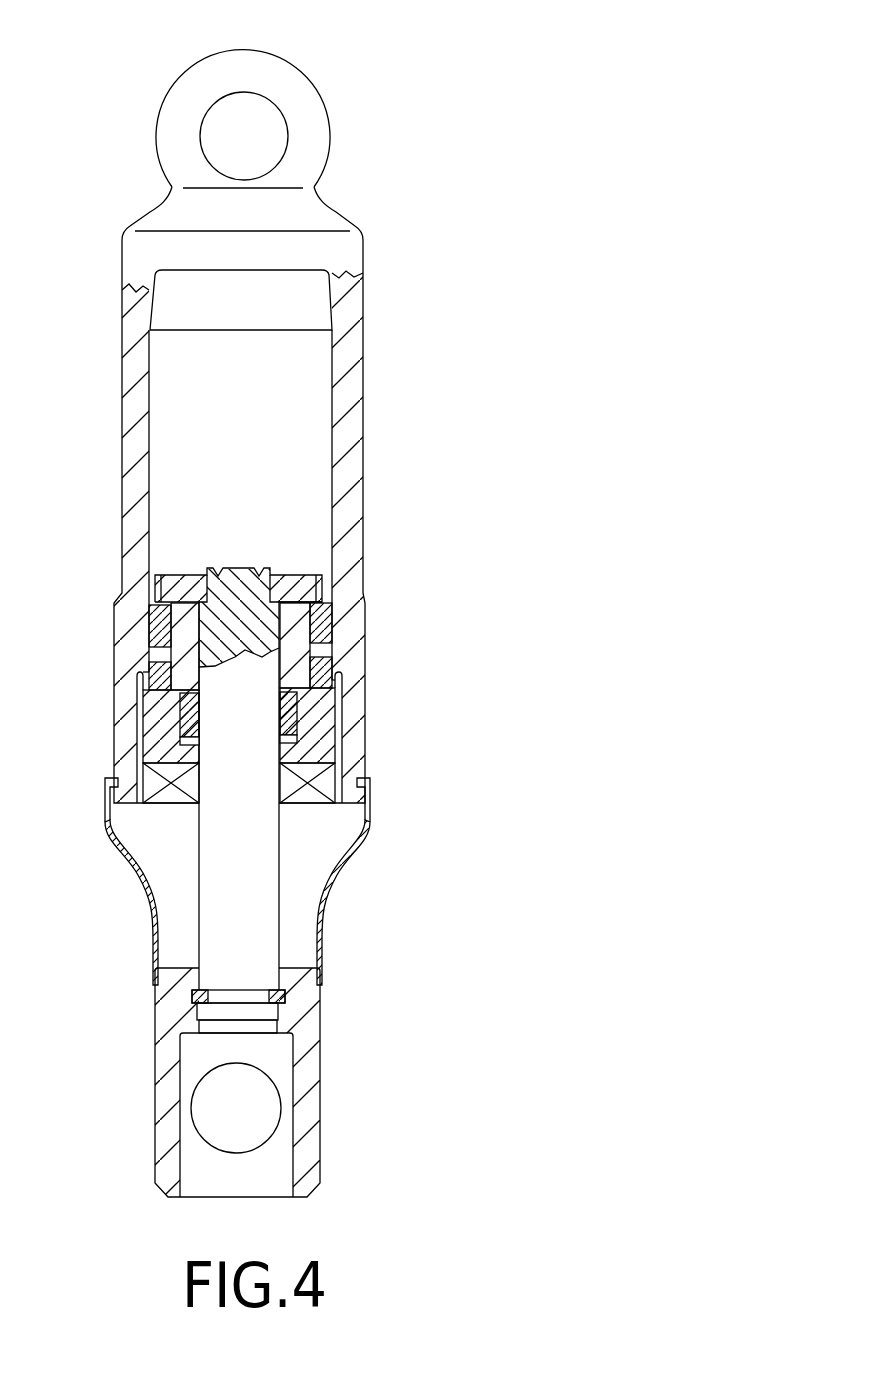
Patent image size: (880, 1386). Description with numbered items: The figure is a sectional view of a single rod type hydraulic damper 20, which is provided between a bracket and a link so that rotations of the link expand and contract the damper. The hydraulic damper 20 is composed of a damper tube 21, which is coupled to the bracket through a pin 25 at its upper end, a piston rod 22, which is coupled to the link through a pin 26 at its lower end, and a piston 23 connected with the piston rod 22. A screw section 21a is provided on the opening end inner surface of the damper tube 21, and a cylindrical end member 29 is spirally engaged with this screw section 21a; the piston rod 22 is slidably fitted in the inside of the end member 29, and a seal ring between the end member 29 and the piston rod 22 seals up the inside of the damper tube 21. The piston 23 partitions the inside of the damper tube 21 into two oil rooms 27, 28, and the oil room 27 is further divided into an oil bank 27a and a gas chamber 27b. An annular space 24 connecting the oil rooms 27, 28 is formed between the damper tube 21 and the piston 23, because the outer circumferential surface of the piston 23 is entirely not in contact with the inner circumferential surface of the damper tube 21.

The hydraulic damper 20 is at (365, 218).
The damper tube 21 is at (342, 493).
The screw section 21a is at (340, 731).
The piston rod 22 is at (277, 877).
The piston 23 is at (317, 586).
The annular space 24 is at (330, 595).
The pin 25 is at (263, 120).
The pin 26 is at (258, 1098).
The oil room 27 is at (305, 420).
The oil bank 27a is at (308, 367).
The gas chamber 27b is at (298, 308).
The oil room 28 is at (337, 640).
The end member 29 is at (340, 743).